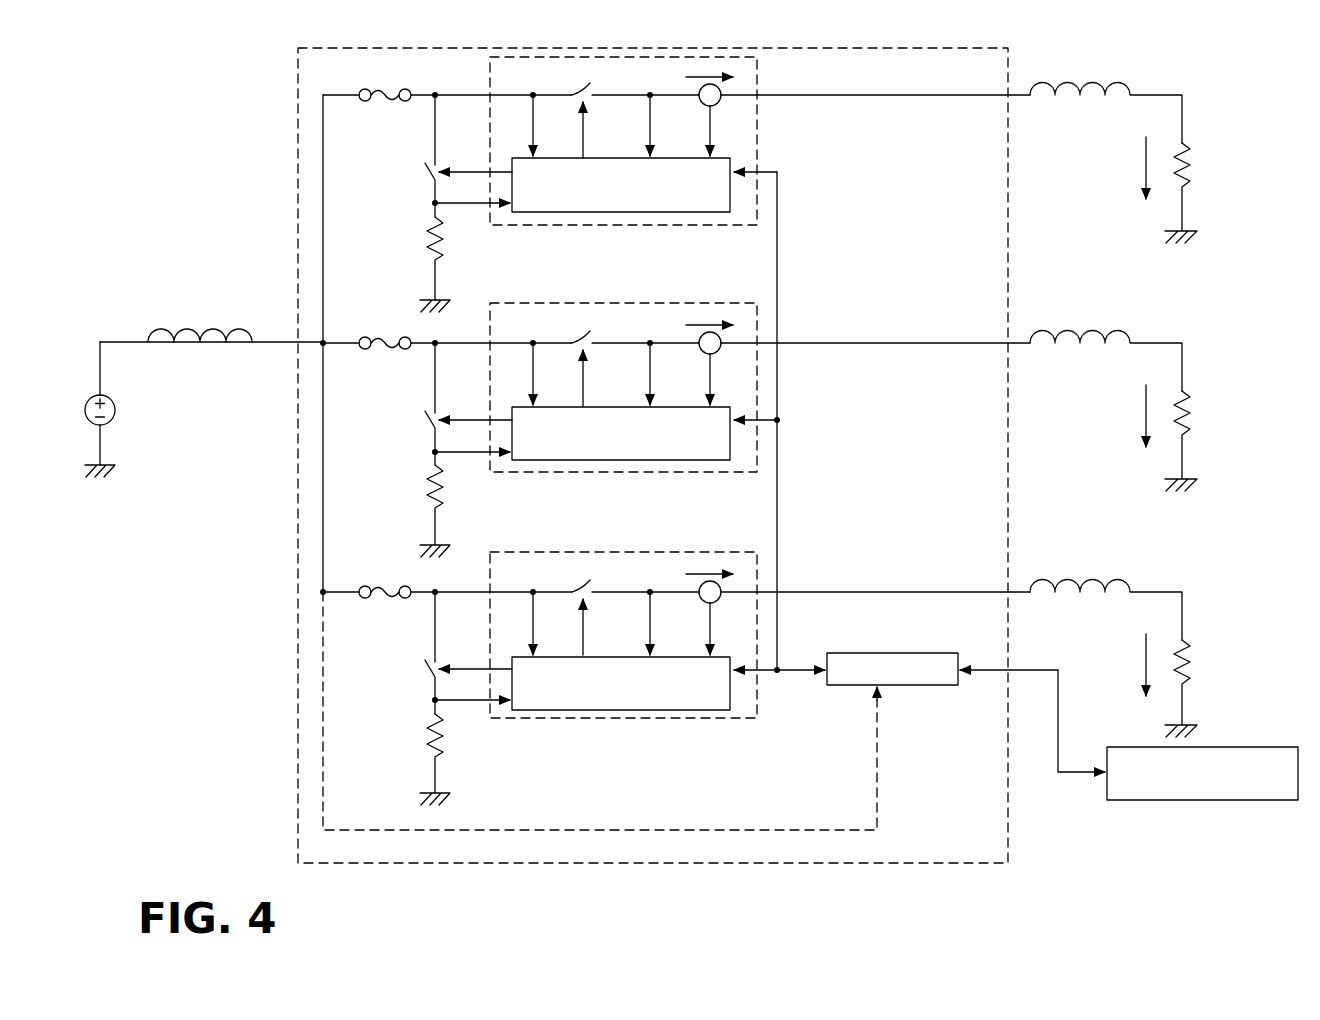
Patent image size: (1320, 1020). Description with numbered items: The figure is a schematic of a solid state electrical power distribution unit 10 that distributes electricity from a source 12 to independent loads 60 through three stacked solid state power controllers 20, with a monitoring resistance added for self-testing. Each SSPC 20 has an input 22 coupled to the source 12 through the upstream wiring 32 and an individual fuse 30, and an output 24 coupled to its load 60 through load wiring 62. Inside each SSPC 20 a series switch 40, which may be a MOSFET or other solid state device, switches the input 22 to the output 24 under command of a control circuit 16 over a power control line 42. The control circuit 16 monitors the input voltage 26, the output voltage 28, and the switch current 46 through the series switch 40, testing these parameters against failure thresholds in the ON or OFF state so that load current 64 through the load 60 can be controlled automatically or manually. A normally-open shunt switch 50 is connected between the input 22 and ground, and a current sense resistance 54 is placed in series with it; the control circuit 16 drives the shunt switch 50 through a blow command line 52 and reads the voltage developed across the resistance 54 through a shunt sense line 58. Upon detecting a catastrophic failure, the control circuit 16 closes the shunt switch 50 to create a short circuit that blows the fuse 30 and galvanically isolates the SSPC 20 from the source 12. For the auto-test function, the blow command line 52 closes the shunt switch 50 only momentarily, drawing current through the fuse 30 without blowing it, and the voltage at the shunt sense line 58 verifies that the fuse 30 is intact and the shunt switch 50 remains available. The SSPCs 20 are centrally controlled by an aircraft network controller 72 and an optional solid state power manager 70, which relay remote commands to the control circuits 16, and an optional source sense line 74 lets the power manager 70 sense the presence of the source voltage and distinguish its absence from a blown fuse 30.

The solid state electrical power distribution unit 10 is at (298, 70).
The source 12 is at (116, 412).
The control circuit 16 is at (615, 213).
The solid state power controller 20 is at (758, 144).
The input 22 is at (436, 93).
The output 24 is at (863, 93).
The input voltage 26 is at (534, 92).
The output voltage 28 is at (651, 93).
The fuse 30 is at (376, 104).
The upstream wiring 32 is at (225, 340).
The series switch 40 is at (587, 84).
The power control line 42 is at (586, 134).
The switch current 46 is at (703, 76).
The shunt switch 50 is at (428, 175).
The blow command line 52 is at (473, 170).
The current sense resistance 54 is at (428, 250).
The shunt sense line 58 is at (466, 205).
The load 60 is at (1188, 183).
The load wiring 62 is at (1075, 89).
The load current 64 is at (1143, 148).
The solid state power manager 70 is at (947, 686).
The aircraft network controller 72 is at (1125, 747).
The source sense line 74 is at (728, 829).